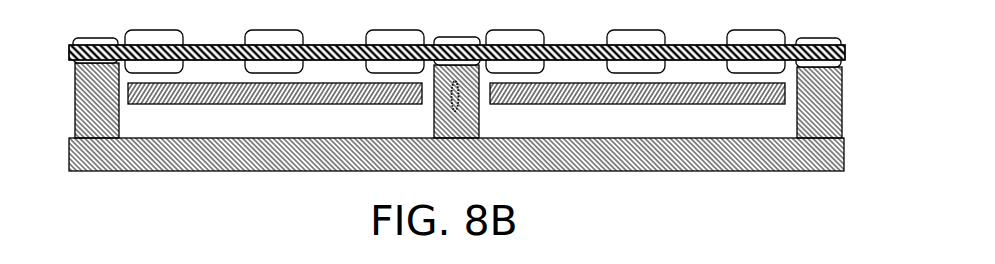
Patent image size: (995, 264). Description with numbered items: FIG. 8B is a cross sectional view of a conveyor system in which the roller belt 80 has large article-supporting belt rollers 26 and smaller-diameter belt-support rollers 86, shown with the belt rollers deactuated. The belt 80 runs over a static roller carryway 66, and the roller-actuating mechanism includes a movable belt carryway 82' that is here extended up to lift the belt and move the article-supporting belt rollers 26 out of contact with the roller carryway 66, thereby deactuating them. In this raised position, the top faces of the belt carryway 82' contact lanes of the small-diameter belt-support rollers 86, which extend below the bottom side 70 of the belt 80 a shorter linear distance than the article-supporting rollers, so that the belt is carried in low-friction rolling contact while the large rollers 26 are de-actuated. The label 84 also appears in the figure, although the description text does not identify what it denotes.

The article-supporting belt rollers 26 is at (618, 37).
The static roller carryway 66 is at (580, 103).
The bottom side of the belt 70 is at (200, 66).
The roller belt 80 is at (693, 46).
The movable belt carryway 82' is at (456, 171).
The first cell element 84 is at (122, 43).
The small-diameter belt-support rollers 86 is at (103, 42).